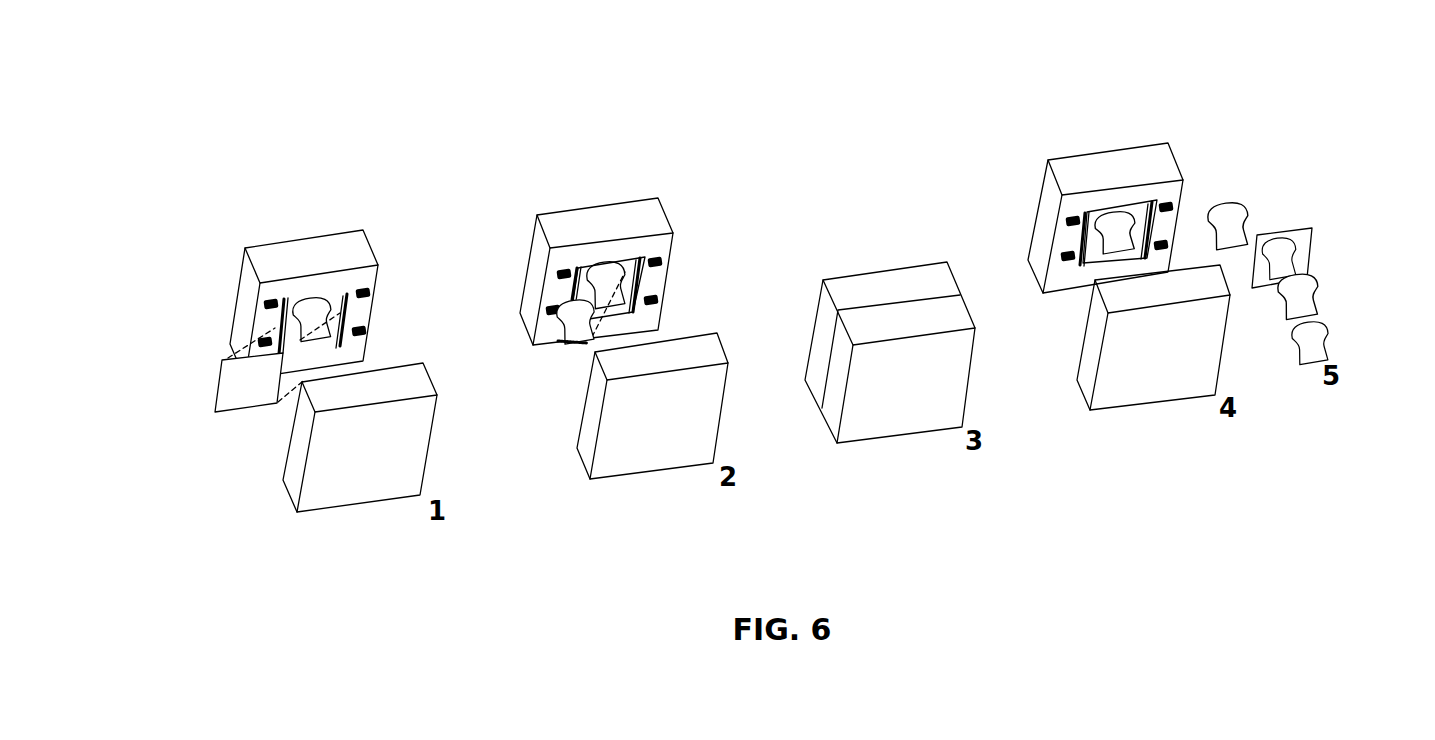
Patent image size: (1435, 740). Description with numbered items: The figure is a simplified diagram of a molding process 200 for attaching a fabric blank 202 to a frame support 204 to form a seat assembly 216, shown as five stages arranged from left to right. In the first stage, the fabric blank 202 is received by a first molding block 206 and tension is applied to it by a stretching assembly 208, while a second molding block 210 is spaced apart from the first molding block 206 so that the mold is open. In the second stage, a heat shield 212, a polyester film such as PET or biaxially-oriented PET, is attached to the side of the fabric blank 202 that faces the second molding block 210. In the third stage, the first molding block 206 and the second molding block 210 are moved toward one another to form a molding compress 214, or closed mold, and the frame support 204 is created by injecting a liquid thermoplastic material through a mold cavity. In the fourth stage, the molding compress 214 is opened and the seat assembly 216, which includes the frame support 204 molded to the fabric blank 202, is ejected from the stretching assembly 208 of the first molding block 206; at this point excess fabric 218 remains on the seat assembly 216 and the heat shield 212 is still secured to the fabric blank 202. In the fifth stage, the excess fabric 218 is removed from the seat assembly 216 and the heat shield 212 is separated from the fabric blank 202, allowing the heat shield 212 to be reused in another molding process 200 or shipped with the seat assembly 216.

The molding process 200 is at (202, 96).
The fabric blank 202 is at (227, 403).
The frame support 204 is at (1145, 197).
The first molding block 206 is at (302, 250).
The stretching assembly 208 is at (258, 342).
The second molding block 210 is at (338, 495).
The heat shield 212 is at (567, 345).
The molding compress 214 is at (963, 318).
The seat assembly 216 is at (1150, 197).
The excess fabric 218 is at (1097, 213).